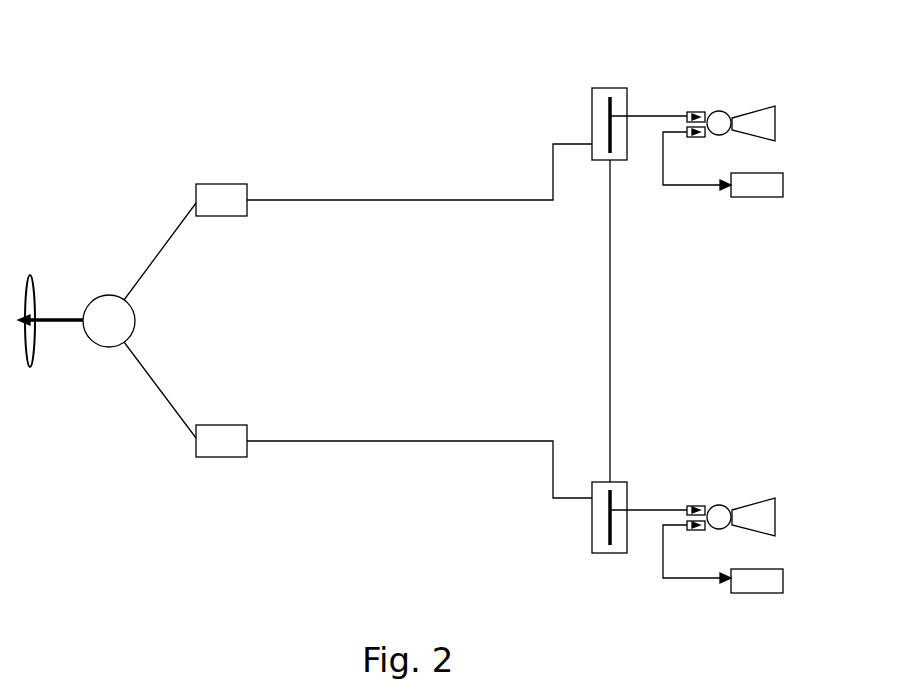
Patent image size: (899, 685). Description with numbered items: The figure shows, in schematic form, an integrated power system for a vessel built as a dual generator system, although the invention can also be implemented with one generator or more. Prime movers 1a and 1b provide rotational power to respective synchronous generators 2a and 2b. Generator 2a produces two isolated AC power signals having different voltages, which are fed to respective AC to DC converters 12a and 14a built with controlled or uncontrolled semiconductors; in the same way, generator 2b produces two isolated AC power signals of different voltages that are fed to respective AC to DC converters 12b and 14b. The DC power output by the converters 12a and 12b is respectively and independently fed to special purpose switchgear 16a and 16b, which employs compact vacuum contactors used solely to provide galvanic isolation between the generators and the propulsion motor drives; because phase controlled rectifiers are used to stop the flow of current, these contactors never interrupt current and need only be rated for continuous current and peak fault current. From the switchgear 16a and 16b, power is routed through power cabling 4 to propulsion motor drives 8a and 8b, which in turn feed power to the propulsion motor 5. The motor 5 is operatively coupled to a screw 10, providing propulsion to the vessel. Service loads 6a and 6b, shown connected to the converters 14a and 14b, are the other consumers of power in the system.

The prime mover 1a is at (788, 112).
The prime mover 1b is at (777, 503).
The synchronous generator 2a is at (725, 102).
The synchronous generator 2b is at (722, 505).
The power cabling 4 is at (600, 323).
The propulsion motor 5 is at (140, 303).
The service load 6a is at (765, 206).
The service load 6b is at (740, 595).
The propulsion motor drive 8a is at (222, 185).
The propulsion motor drive 8b is at (230, 230).
The screw 10 is at (37, 283).
The AC to DC converter 12a is at (694, 108).
The AC to DC converter 12b is at (694, 502).
The AC to DC converter 14a is at (695, 137).
The AC to DC converter 14b is at (695, 530).
The special purpose switchgear 16a is at (592, 88).
The special purpose switchgear 16b is at (632, 472).